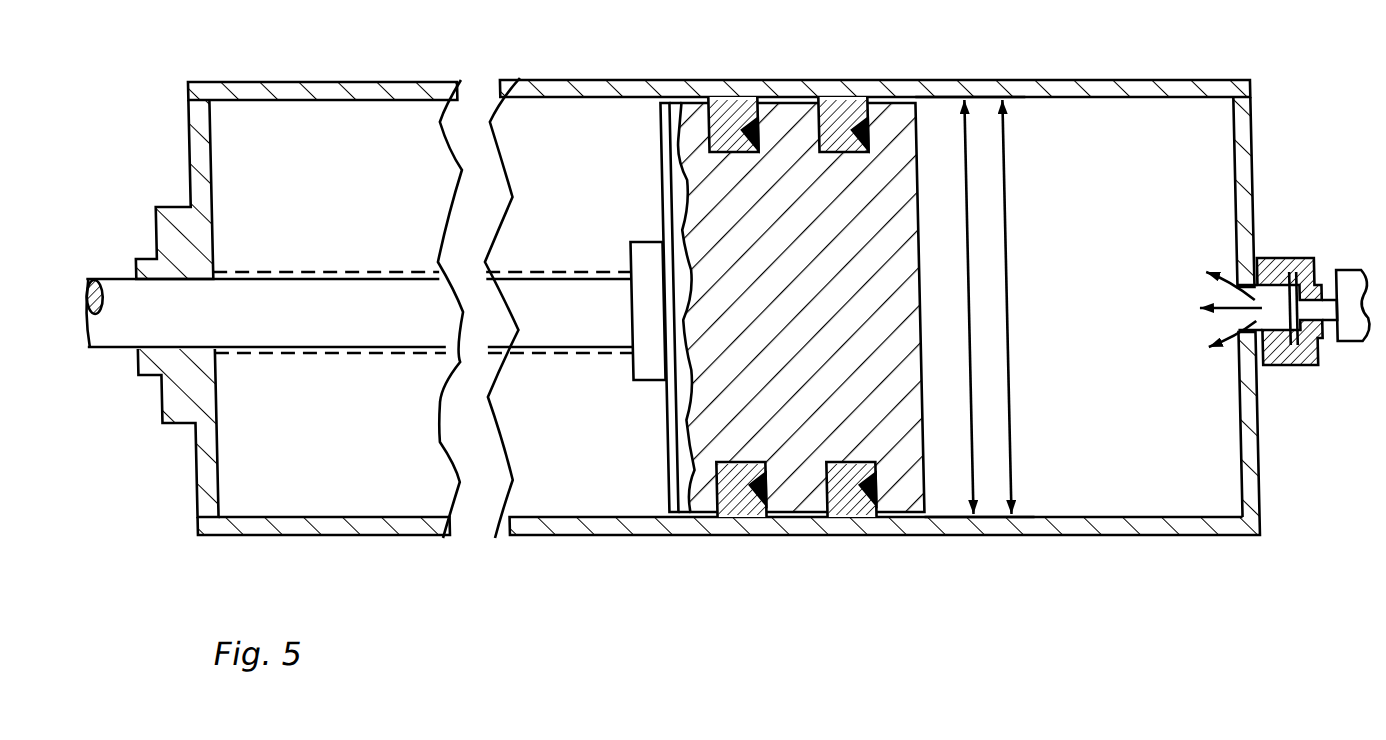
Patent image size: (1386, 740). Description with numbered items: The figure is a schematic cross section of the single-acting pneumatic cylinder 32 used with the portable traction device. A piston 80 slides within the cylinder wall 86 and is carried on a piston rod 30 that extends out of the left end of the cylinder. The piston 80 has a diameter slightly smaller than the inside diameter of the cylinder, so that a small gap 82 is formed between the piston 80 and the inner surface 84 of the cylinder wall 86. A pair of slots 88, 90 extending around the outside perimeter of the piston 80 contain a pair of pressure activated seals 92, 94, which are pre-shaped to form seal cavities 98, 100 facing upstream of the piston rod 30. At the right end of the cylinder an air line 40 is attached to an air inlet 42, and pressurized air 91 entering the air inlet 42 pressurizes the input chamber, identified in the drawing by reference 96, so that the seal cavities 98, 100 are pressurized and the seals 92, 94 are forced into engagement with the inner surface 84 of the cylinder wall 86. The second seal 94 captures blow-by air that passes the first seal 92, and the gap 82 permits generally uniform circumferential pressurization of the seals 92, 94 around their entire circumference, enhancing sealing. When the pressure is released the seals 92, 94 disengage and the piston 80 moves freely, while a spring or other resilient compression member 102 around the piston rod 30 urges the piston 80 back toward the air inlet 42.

The piston rod 30 is at (184, 325).
The pneumatic cylinder 32 is at (1053, 68).
The air line 40 is at (1348, 278).
The air inlet 42 is at (1275, 300).
The piston 80 is at (688, 518).
The gap 82 is at (932, 98).
The inner surface 84 is at (311, 107).
The cylinder wall 86 is at (1150, 528).
The slot 88 is at (717, 518).
The slot 90 is at (840, 515).
The pressurized air 91 is at (1211, 312).
The pressure activated seal 92 is at (847, 100).
The pressure activated seal 94 is at (740, 100).
The pressure chamber 96 is at (1133, 117).
The seal cavity 98 is at (754, 488).
The seal cavity 100 is at (862, 490).
The compression member 102 is at (323, 353).